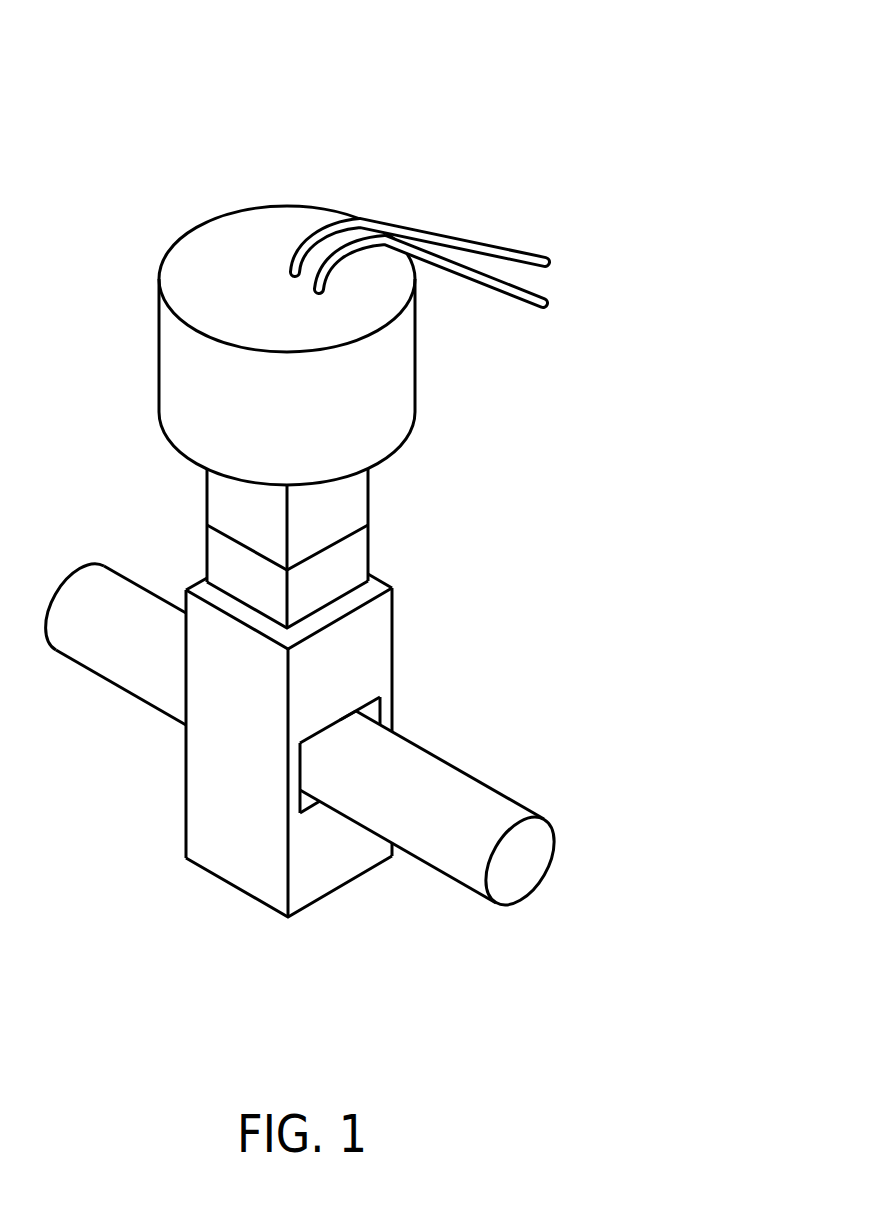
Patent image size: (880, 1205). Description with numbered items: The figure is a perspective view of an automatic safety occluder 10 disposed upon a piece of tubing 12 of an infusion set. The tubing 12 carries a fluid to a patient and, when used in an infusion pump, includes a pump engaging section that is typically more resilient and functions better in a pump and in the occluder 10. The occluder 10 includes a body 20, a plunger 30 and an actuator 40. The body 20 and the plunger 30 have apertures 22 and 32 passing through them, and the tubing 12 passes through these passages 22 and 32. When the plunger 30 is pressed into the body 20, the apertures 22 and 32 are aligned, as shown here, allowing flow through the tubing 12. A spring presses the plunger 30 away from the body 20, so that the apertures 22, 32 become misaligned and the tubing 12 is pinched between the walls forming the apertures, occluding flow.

The occluder 10 is at (530, 142).
The tubing 12 is at (460, 788).
The body 20 is at (358, 655).
The aperture 22 is at (313, 803).
The plunger 30 is at (345, 578).
The aperture 32 is at (390, 708).
The actuator 40 is at (362, 420).